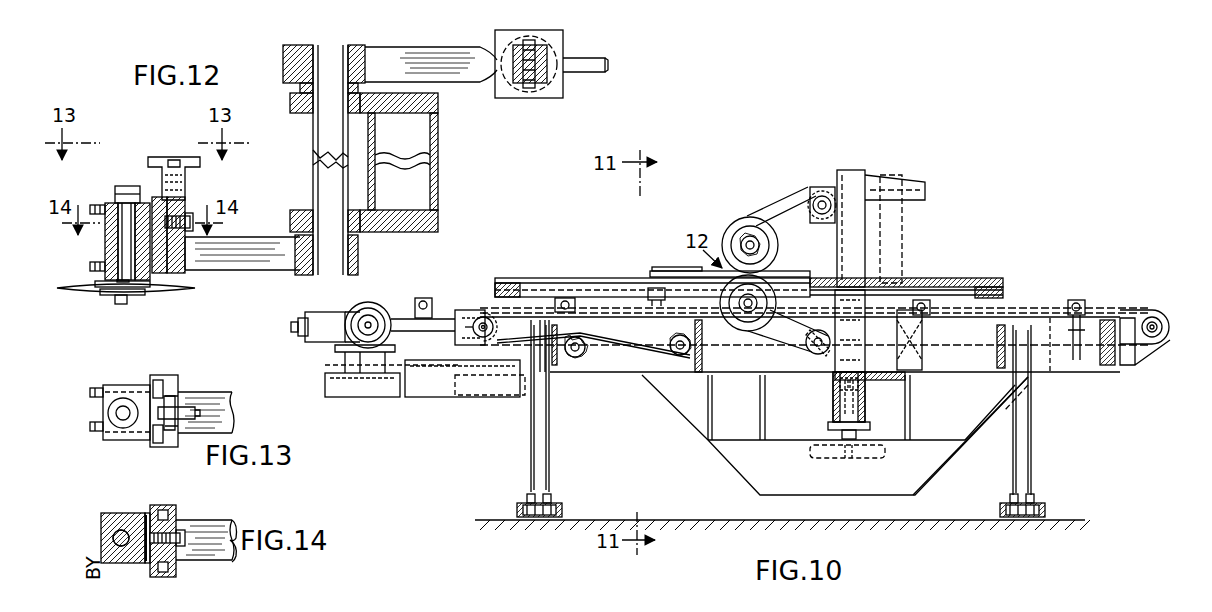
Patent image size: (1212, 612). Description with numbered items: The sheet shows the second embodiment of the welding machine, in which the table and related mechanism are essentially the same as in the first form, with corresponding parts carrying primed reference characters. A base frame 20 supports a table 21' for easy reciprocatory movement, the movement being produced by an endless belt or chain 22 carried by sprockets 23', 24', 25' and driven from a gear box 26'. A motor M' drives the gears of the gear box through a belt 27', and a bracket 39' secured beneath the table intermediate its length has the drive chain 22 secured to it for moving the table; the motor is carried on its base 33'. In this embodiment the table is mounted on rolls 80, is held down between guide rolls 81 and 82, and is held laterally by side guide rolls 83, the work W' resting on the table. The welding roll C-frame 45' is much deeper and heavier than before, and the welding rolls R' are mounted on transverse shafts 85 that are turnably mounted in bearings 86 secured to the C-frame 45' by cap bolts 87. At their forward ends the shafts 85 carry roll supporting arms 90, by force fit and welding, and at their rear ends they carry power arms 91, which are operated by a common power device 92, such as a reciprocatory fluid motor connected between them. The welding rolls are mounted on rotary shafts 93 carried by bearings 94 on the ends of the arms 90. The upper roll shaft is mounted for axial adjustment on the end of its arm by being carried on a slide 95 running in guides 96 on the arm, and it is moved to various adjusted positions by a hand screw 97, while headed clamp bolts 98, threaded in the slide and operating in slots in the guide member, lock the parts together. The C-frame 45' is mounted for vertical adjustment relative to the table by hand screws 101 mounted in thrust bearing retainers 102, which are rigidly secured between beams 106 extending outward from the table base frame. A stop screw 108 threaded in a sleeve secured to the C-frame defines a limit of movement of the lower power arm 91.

In FIG. 10, the base frame 20 is at (577, 373).
In FIG. 10, the table 21' is at (906, 273).
In FIG. 10, the endless belt or chain 22 is at (645, 352).
In FIG. 10, the sprocket 23' is at (498, 327).
In FIG. 10, the sprocket 24' is at (1162, 315).
In FIG. 10, the sprocket 25' is at (659, 339).
In FIG. 10, the gear box 26' is at (470, 315).
In FIG. 10, the belt 27' is at (423, 300).
In FIG. 10, the motor base 33' is at (325, 316).
In FIG. 10, the bracket 39' is at (922, 313).
In FIG. 12, the welding roll C-frame 45' is at (417, 162).
In FIG. 10, the welding roll C-frame 45' is at (860, 261).
In FIG. 10, the rolls 80 is at (428, 298).
In FIG. 10, the guide roll 81 is at (677, 258).
In FIG. 10, the guide roll 82 is at (666, 297).
In FIG. 10, the side guide rolls 83 is at (648, 300).
In FIG. 12, the transverse shafts 85 is at (313, 180).
In FIG. 10, the transverse shafts 85 is at (813, 200).
In FIG. 12, the bearings 86 is at (293, 108).
In FIG. 10, the bearings 86 is at (828, 187).
In FIG. 10, the cap bolts 87 is at (815, 192).
In FIG. 12, the roll supporting arms 90 is at (240, 270).
In FIG. 13, the roll supporting arms 90 is at (222, 392).
In FIG. 14, the roll supporting arms 90 is at (222, 520).
In FIG. 10, the roll supporting arms 90 is at (790, 217).
In FIG. 12, the power arms 91 is at (428, 52).
In FIG. 10, the power arms 91 is at (908, 188).
In FIG. 12, the common power device 92 is at (563, 42).
In FIG. 10, the common power device 92 is at (890, 280).
In FIG. 12, the rotary shafts 93 is at (120, 304).
In FIG. 13, the rotary shafts 93 is at (123, 405).
In FIG. 14, the rotary shafts 93 is at (121, 546).
In FIG. 10, the rotary shafts 93 is at (748, 240).
In FIG. 12, the bearings 94 is at (105, 248).
In FIG. 13, the bearings 94 is at (103, 420).
In FIG. 14, the bearings 94 is at (101, 533).
In FIG. 12, the slide 95 is at (153, 200).
In FIG. 14, the slide 95 is at (146, 513).
In FIG. 14, the guides 96 is at (165, 505).
In FIG. 12, the hand screw 97 is at (175, 157).
In FIG. 13, the hand screw 97 is at (176, 405).
In FIG. 12, the headed clamp bolts 98 is at (190, 213).
In FIG. 14, the headed clamp bolts 98 is at (182, 530).
In FIG. 10, the hand screws 101 is at (846, 460).
In FIG. 10, the thrust bearing retainers 102 is at (838, 420).
In FIG. 10, the beams 106 is at (833, 398).
In FIG. 10, the stop screw 108 is at (866, 398).
In FIG. 10, the motor M' is at (368, 309).
In FIG. 12, the welding rolls R' is at (129, 302).
In FIG. 10, the welding rolls R' is at (770, 274).
In FIG. 10, the workpiece W' is at (718, 255).